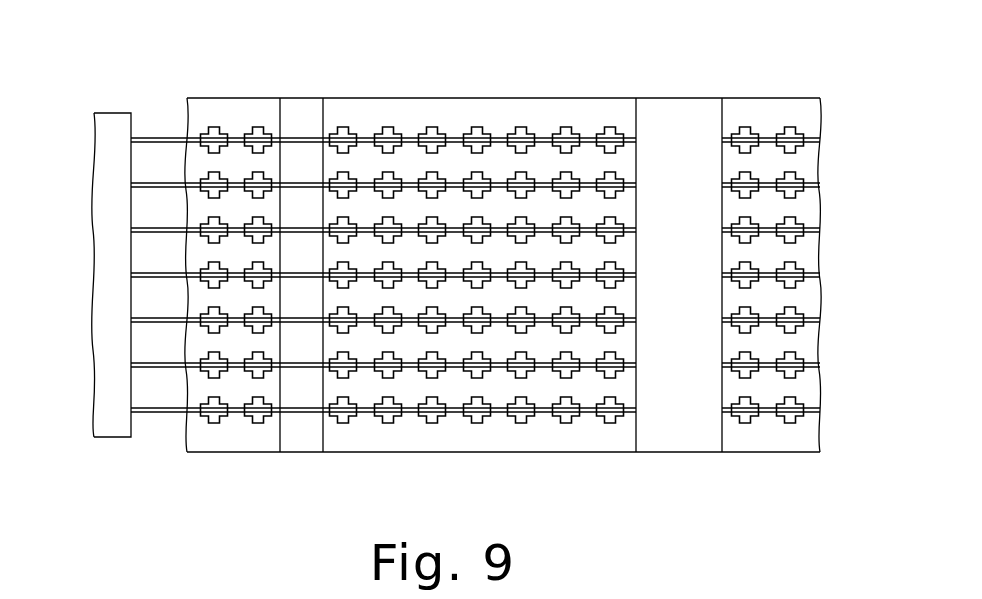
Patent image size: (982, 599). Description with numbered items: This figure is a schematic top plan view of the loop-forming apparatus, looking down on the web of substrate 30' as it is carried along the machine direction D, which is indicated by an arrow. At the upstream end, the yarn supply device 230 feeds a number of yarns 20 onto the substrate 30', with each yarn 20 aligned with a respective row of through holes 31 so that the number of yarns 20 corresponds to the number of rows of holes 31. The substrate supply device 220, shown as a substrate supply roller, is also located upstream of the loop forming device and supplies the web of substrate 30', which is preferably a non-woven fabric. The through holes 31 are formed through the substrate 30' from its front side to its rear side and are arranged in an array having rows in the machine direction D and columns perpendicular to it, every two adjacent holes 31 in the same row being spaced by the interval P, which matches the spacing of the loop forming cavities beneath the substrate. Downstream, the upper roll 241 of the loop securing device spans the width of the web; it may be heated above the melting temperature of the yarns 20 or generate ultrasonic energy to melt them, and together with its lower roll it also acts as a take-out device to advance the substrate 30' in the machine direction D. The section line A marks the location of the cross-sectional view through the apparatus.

The yarn 20 is at (162, 410).
The substrate 30' is at (494, 315).
The through hole 31 is at (253, 421).
The substrate supply device 220 is at (298, 107).
The yarn supply device 230 is at (120, 108).
The upper roll 241 is at (698, 110).
The interval P is at (258, 122).
The machine direction D is at (522, 80).
The section line A- A is at (88, 274).